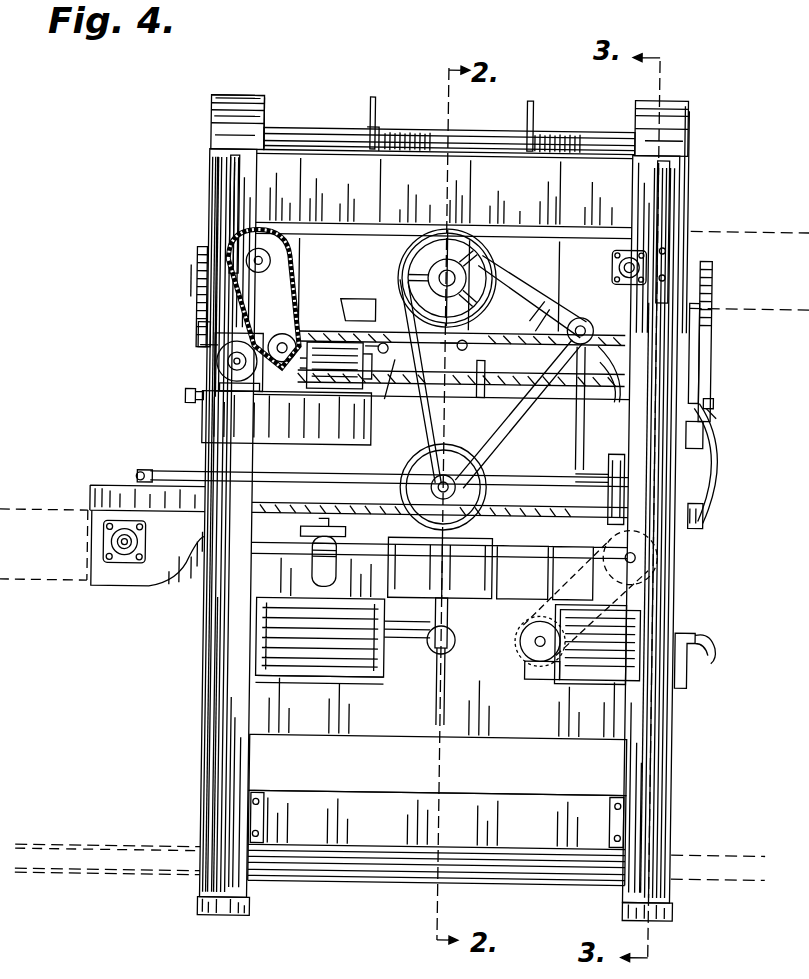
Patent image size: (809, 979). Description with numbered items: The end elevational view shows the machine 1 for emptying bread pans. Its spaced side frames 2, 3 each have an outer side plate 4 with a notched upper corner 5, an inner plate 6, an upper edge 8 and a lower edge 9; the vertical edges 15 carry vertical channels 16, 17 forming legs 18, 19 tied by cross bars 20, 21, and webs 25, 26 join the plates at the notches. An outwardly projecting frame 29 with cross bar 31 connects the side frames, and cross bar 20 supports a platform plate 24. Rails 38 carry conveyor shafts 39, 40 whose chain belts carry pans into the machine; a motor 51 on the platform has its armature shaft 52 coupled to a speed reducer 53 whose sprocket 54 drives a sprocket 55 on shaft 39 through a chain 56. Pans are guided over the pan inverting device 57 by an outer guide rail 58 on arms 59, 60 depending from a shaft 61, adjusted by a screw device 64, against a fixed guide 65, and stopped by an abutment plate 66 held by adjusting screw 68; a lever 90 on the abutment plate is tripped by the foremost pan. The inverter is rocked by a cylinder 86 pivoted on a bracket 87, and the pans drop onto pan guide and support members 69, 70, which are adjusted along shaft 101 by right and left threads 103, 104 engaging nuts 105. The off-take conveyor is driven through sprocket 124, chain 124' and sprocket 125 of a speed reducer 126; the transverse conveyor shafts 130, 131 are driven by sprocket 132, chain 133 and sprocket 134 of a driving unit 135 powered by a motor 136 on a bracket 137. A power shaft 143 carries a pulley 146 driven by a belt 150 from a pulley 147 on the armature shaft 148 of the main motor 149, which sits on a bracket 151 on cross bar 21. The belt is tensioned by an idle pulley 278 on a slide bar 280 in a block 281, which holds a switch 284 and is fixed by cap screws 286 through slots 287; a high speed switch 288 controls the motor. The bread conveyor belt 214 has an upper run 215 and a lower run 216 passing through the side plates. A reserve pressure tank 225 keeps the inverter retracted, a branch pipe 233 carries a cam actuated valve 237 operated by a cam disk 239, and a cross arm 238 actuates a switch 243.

The machine 1 is at (696, 100).
The side frame 2 is at (228, 98).
The side frame 3 is at (686, 118).
The outer side plate 4 is at (208, 124).
The notched upper corner 5 is at (679, 238).
The inner plate 6 is at (259, 104).
The upper edge 8 is at (208, 96).
The lower edge 9 is at (207, 890).
The vertical edge 15 is at (205, 742).
The vertical channel 16 is at (214, 762).
The vertical channel 17 is at (663, 760).
The leg 18 is at (210, 822).
The leg 19 is at (663, 822).
The cross bar 20 is at (268, 715).
The cross bar 21 is at (200, 588).
The platform plate 24 is at (352, 676).
The web 25 is at (239, 98).
The web 26 is at (663, 98).
The outwardly projecting frame 29 is at (208, 235).
The cross bar 31 is at (224, 232).
The rail 38 is at (268, 540).
The shaft 39 is at (641, 550).
The shaft 40 is at (104, 546).
The motor 51 is at (627, 640).
The armature shaft 52 is at (555, 678).
The speed reducer 53 is at (532, 660).
The sprocket 54 is at (547, 664).
The sprocket 55 is at (656, 574).
The chain 56 is at (582, 648).
The pan inverting device 57 is at (410, 640).
The outer guide rail 58 is at (140, 476).
The arm 59 is at (275, 477).
The arm 60 is at (575, 440).
The shaft 61 is at (613, 375).
The screw device 64 is at (184, 399).
The fixed guide 65 is at (92, 494).
The abutment plate 66 is at (612, 455).
The adjusting screw 68 is at (706, 494).
The pan guide and support member 69 is at (367, 98).
The pan guide and support member 70 is at (529, 112).
The cylinder 86 is at (441, 655).
The bracket 87 is at (441, 705).
The lever 90 is at (600, 472).
The shaft 101 is at (317, 132).
The right thread 103 is at (386, 134).
The left thread 104 is at (563, 133).
The nut 105 is at (374, 128).
The sprocket 124 is at (166, 291).
The chain 124' is at (158, 280).
The sprocket 125 is at (198, 348).
The motor driven speed reducer 126 is at (228, 334).
The shaft 130 is at (609, 262).
The shaft 131 is at (267, 264).
The sprocket 132 is at (262, 230).
The chain 133 is at (269, 240).
The sprocket 134 is at (229, 360).
The driving unit 135 is at (241, 398).
The motor 136 is at (335, 378).
The bracket 137 is at (209, 430).
The power shaft 143 is at (430, 277).
The pulley 146 is at (482, 262).
The pulley 147 is at (452, 478).
The armature shaft 148 is at (518, 414).
The motor 149 is at (418, 478).
The belt 150 is at (531, 300).
The bracket 151 is at (486, 538).
The endless belt 214 is at (40, 848).
The upper run 215 is at (81, 850).
The lower run 216 is at (82, 876).
The reserve pressure tank 225 is at (260, 655).
The branch pipe 233 is at (718, 462).
The cam actuated valve 237 is at (715, 412).
The cross arm 238 is at (710, 265).
The cam disk 239 is at (702, 340).
The switch 243 is at (710, 398).
The idle pulley 278 is at (586, 322).
The slide bar 280 is at (542, 325).
The block 281 is at (479, 375).
The switch 284 is at (346, 300).
The cap screw 286 is at (390, 347).
The slot 287 is at (390, 388).
The high speed switch 288 is at (703, 432).